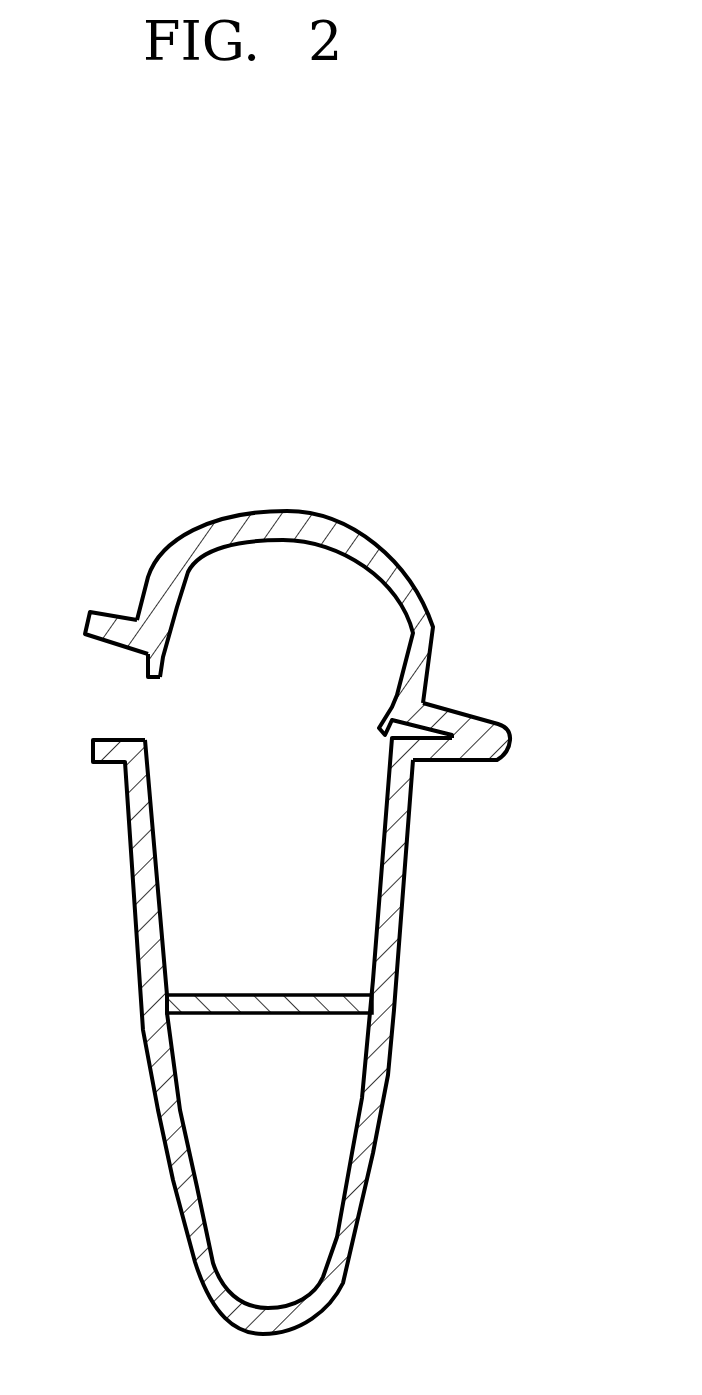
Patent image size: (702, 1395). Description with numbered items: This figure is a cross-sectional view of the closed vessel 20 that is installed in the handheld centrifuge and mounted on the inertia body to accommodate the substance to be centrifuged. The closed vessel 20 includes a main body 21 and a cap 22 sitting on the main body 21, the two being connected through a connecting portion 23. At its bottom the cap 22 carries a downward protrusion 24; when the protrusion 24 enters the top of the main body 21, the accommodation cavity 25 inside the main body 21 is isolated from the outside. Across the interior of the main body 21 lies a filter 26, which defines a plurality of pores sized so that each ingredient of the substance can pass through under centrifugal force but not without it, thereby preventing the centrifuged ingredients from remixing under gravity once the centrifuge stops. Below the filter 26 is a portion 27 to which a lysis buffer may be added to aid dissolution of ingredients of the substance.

The closed vessel 20 is at (480, 655).
The main body 21 is at (390, 895).
The cap 22 is at (288, 513).
The connecting portion 23 is at (460, 738).
The protrusion 24 is at (143, 667).
The accommodation cavity 25 is at (296, 855).
The filter 26 is at (263, 993).
The portion under the filter 27 is at (280, 1155).